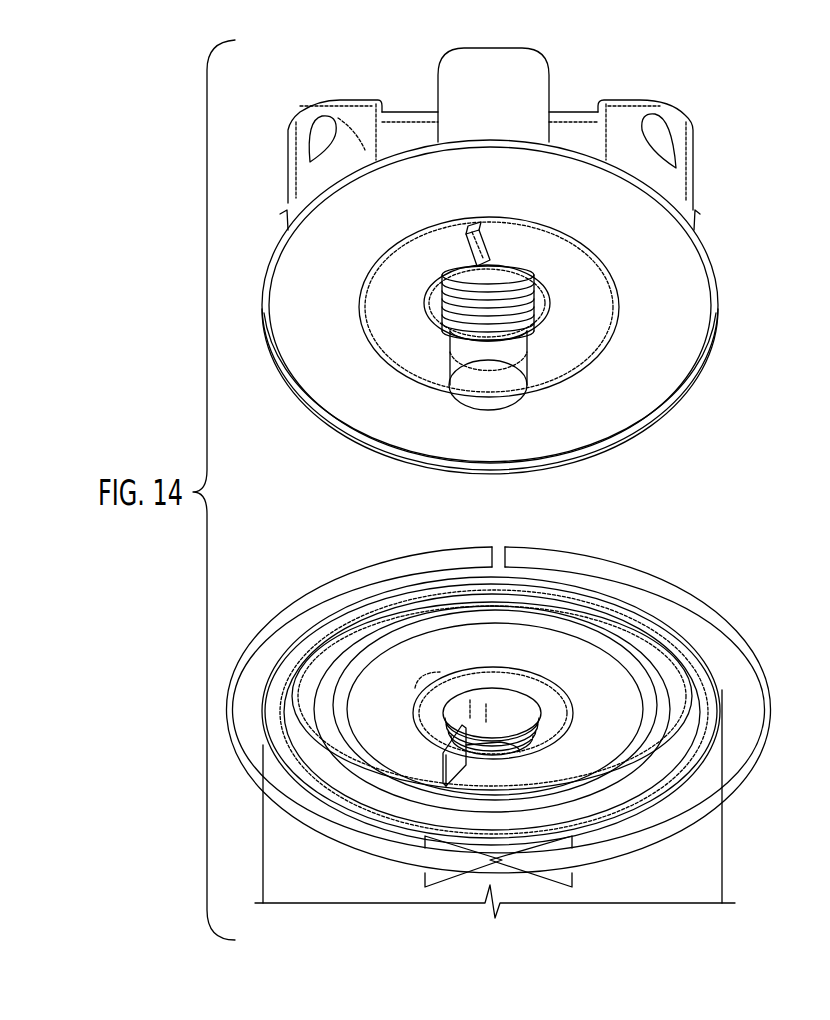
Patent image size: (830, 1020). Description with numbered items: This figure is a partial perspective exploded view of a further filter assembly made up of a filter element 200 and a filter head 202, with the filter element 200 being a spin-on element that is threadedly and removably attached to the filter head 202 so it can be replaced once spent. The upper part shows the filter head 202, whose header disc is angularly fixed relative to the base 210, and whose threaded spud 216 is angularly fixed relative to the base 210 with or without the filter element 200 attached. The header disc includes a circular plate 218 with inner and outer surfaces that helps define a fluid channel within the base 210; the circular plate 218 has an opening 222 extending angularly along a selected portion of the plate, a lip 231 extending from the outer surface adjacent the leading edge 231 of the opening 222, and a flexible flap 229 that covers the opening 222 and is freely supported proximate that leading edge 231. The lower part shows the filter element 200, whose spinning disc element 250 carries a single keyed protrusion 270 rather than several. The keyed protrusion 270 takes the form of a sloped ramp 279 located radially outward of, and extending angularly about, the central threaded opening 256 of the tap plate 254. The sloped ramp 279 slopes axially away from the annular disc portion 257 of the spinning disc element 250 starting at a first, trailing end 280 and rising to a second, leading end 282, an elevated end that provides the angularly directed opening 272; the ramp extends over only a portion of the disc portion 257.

The filter element 200 is at (776, 666).
The filter head 202 is at (722, 233).
The base 210 is at (336, 156).
The threaded spud 216 is at (513, 345).
The circular plate 218 is at (550, 252).
The opening 222 is at (384, 312).
The flexible flap 229 is at (442, 250).
The lip / leading edge 231 is at (472, 247).
The spinning disc element 250 is at (530, 643).
The tap plate 254 is at (463, 700).
The central threaded opening 256 is at (498, 684).
The annular disc portion 257 is at (577, 755).
The keyed protrusion 270 is at (377, 688).
The opening 272 is at (452, 766).
The sloped ramp 279 is at (462, 648).
The first end 280 is at (585, 663).
The second end 282 is at (467, 740).